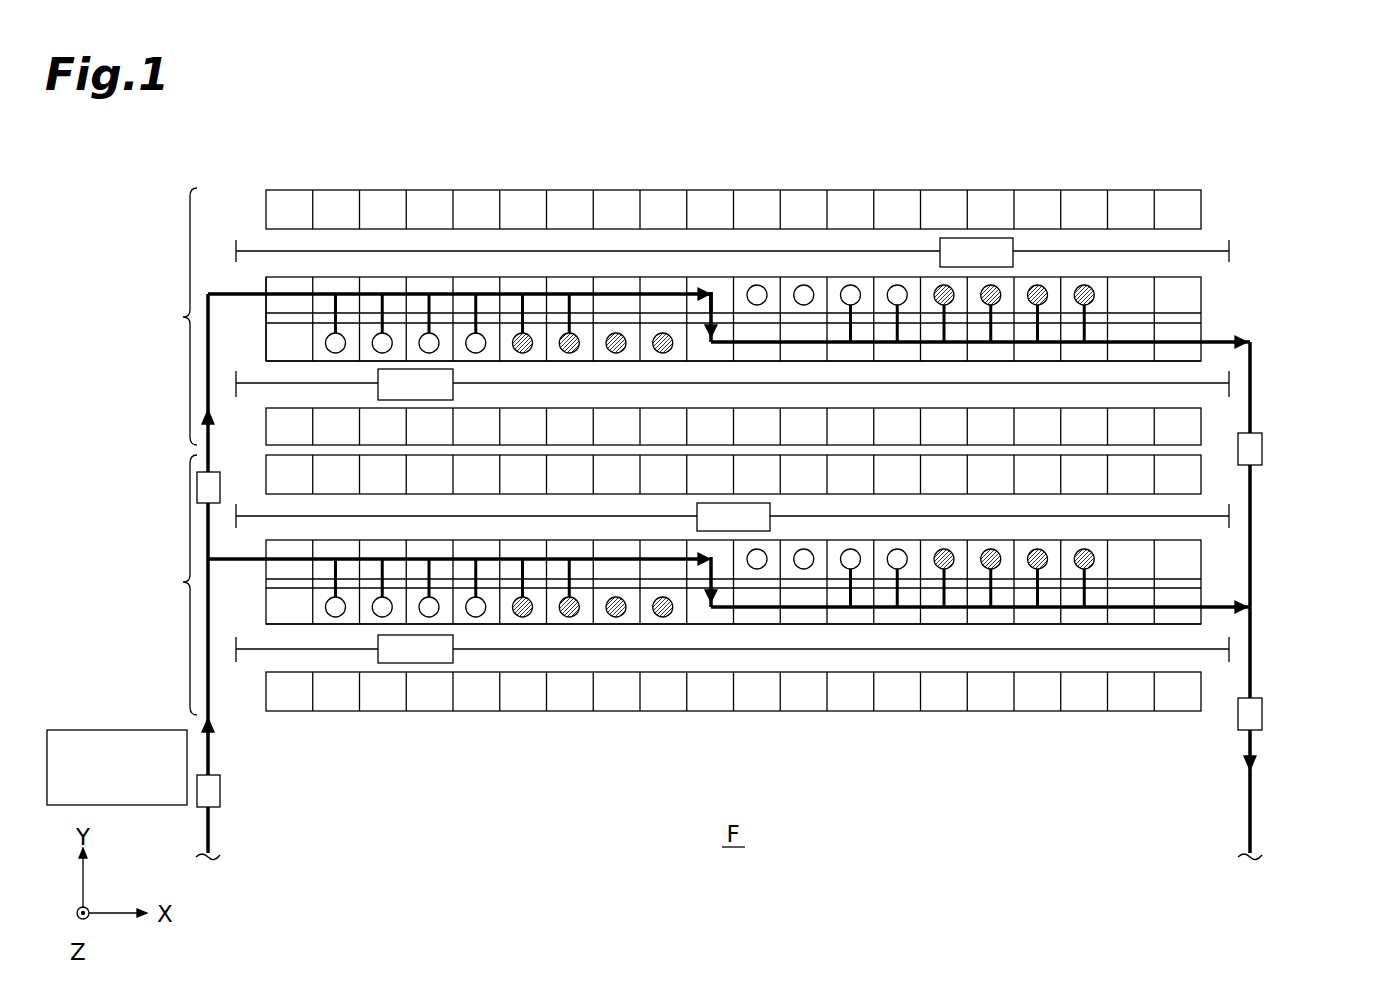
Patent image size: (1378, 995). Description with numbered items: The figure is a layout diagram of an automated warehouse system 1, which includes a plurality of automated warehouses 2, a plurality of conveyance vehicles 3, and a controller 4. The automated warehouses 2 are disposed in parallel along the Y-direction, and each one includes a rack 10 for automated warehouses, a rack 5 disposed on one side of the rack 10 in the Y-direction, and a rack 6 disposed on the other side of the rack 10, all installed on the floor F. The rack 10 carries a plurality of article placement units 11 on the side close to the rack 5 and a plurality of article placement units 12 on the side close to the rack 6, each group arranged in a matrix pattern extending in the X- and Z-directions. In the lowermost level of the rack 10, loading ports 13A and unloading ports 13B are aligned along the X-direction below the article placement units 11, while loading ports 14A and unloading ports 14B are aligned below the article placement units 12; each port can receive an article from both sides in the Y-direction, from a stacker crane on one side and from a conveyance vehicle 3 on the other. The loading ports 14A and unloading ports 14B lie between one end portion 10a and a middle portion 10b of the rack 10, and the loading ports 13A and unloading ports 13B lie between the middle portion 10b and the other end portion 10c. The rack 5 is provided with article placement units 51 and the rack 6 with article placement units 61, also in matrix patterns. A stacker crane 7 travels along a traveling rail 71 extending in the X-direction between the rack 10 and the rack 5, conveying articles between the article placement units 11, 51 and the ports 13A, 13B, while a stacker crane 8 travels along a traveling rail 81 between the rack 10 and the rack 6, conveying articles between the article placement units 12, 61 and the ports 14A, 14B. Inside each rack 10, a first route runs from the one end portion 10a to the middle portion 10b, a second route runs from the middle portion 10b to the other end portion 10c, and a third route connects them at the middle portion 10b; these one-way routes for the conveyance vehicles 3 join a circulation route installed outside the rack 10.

The automated warehouse system 1 is at (150, 192).
The automated warehouse 2 is at (180, 451).
The conveyance vehicle 3 is at (220, 487).
The controller 4 is at (67, 730).
The rack 5 is at (1210, 194).
The article placement unit 51 is at (1204, 216).
The rack 6 is at (1212, 414).
The article placement unit 61 is at (1204, 428).
The stacker crane 7 is at (985, 237).
The traveling rail 71 is at (1137, 252).
The stacker crane 8 is at (378, 380).
The traveling rail 81 is at (236, 398).
The rack 10 is at (1212, 284).
The one end portion 10a is at (265, 317).
The middle portion 10b is at (703, 277).
The other end portion 10c is at (1204, 318).
The article placement unit 11 is at (1204, 300).
The article placement unit 12 is at (1204, 352).
The loading port 13A is at (882, 283).
The unloading port 13B is at (1072, 282).
The loading port 14A is at (392, 327).
The unloading port 14B is at (555, 332).